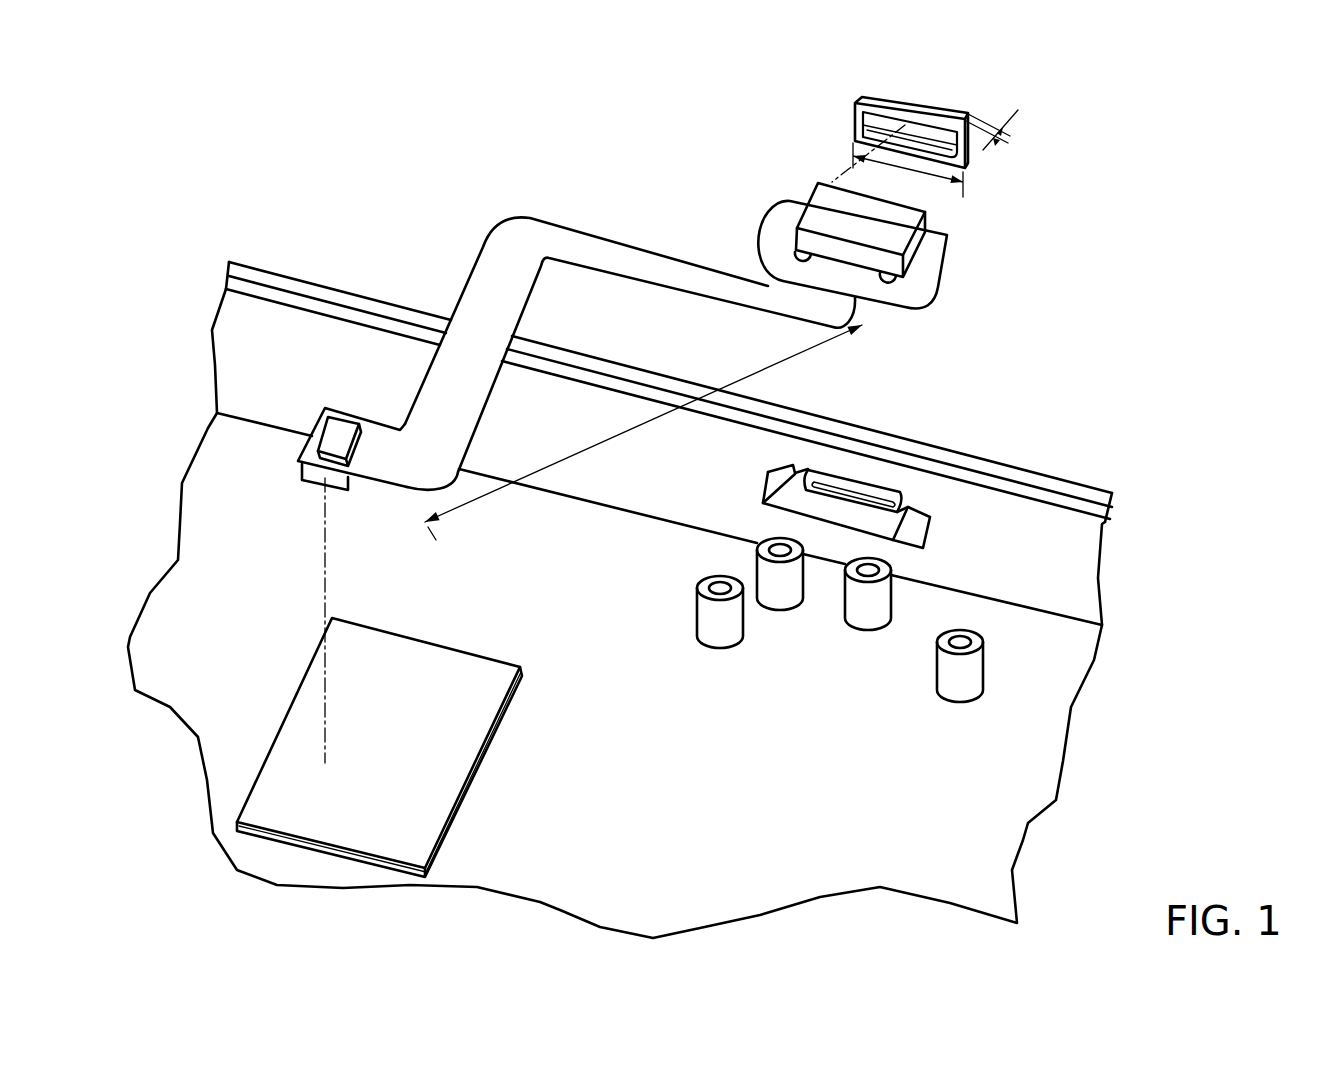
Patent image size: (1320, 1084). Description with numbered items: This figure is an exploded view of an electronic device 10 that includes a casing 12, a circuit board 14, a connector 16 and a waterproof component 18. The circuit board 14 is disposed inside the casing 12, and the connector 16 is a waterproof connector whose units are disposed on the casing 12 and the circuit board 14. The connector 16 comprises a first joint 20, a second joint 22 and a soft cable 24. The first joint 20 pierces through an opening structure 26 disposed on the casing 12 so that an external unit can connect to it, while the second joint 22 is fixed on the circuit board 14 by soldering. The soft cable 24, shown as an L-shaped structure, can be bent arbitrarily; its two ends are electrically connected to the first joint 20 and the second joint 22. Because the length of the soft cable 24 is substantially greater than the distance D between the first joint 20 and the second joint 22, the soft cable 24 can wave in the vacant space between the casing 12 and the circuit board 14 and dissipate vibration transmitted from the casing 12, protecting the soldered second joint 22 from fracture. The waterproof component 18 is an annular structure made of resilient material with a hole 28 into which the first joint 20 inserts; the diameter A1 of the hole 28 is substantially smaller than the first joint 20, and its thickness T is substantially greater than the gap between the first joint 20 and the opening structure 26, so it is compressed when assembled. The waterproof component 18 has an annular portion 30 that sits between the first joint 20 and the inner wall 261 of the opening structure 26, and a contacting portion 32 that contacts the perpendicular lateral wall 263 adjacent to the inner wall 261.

The electronic device 10 is at (1180, 160).
The casing 12 is at (1052, 550).
The circuit board 14 is at (283, 790).
The connector 16 is at (570, 128).
The waterproof component 18 is at (756, 157).
The first joint 20 is at (822, 222).
The second joint 22 is at (347, 430).
The soft cable 24 is at (503, 230).
The opening structure 26 is at (904, 463).
The inner wall 261 is at (828, 488).
The lateral wall 263 is at (922, 519).
The hole 28 is at (931, 138).
The annular portion 30 is at (862, 97).
The contacting portion 32 is at (858, 125).
The distance D is at (643, 432).
The diameter A1 is at (908, 173).
The thickness T is at (996, 136).